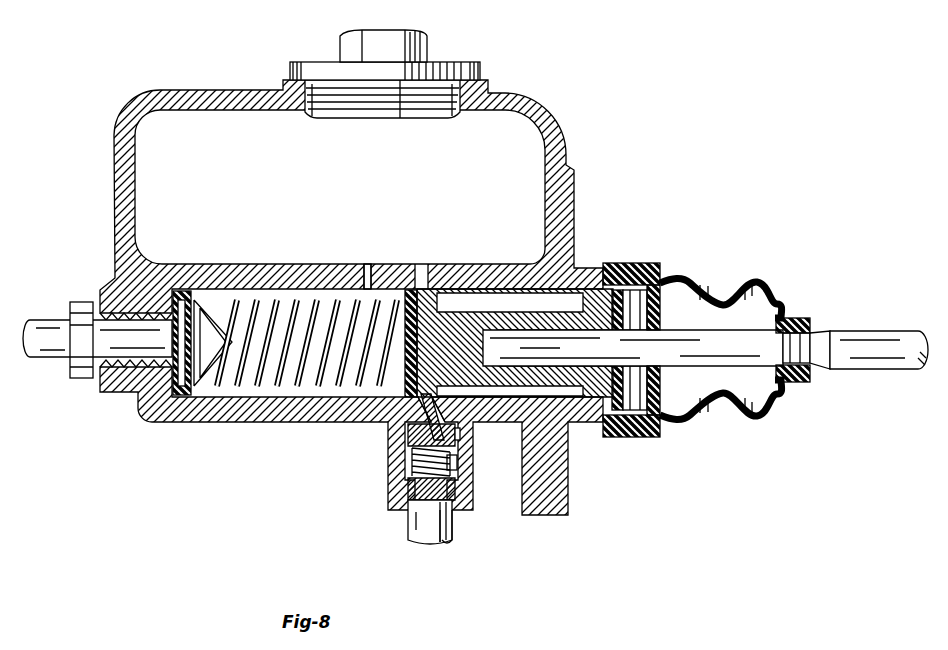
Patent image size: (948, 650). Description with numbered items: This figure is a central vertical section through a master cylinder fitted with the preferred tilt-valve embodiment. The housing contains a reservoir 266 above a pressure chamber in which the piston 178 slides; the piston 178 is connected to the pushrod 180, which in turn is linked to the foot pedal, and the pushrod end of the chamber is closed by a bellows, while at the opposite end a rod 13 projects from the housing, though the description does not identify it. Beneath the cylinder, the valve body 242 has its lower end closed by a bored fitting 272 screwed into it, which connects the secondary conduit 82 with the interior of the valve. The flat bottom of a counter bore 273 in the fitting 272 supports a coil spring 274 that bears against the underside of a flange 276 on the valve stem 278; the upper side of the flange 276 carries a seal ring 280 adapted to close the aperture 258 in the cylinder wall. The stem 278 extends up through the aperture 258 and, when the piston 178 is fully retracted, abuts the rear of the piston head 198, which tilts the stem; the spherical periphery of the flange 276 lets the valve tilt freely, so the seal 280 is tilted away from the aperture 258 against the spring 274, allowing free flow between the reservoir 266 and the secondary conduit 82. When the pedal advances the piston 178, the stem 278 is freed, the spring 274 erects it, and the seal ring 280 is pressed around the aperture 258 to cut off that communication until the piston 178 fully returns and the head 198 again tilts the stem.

The push rod 13 is at (57, 330).
The reservoir 266 is at (392, 190).
The piston head 198 is at (389, 276).
The piston 178 is at (505, 308).
The pushrod 180 is at (860, 341).
The aperture 258 is at (418, 398).
The valve stem 278 is at (447, 401).
The flange 276 is at (402, 436).
The coil spring 274 is at (405, 460).
The valve body 242 is at (407, 479).
The bored fitting 272 is at (408, 507).
The secondary conduit 82 is at (455, 523).
The seal ring 280 is at (473, 433).
The counter bore 273 is at (463, 458).